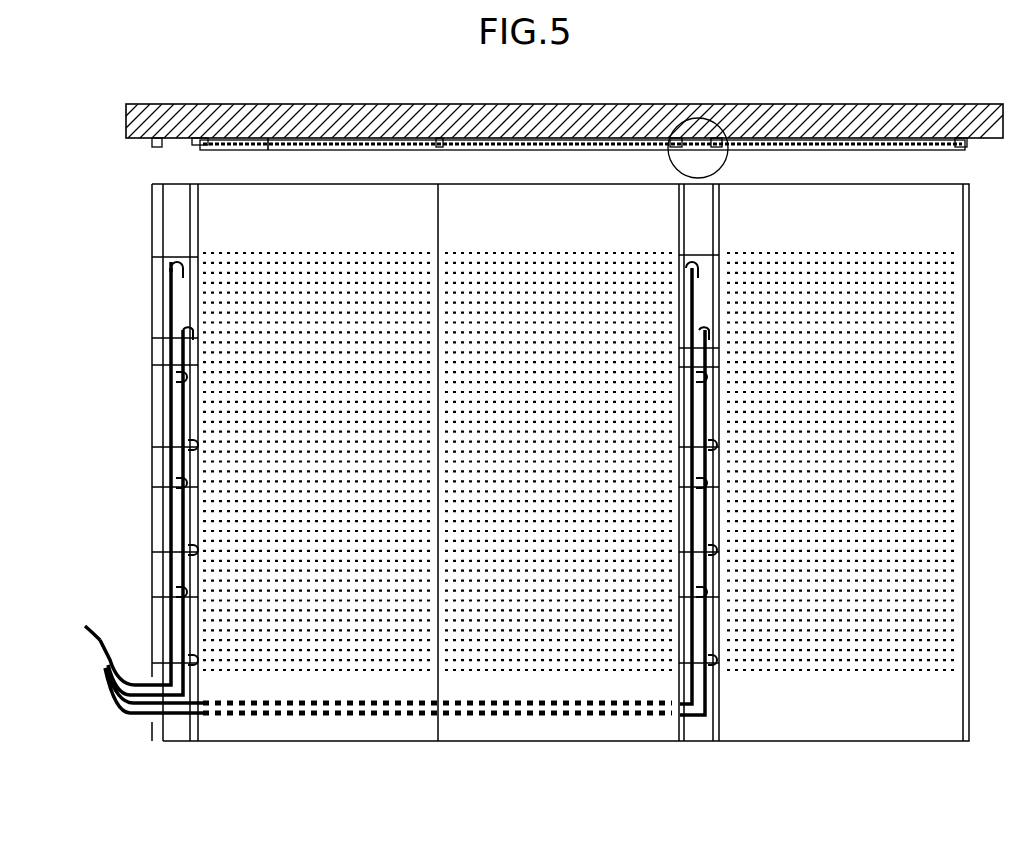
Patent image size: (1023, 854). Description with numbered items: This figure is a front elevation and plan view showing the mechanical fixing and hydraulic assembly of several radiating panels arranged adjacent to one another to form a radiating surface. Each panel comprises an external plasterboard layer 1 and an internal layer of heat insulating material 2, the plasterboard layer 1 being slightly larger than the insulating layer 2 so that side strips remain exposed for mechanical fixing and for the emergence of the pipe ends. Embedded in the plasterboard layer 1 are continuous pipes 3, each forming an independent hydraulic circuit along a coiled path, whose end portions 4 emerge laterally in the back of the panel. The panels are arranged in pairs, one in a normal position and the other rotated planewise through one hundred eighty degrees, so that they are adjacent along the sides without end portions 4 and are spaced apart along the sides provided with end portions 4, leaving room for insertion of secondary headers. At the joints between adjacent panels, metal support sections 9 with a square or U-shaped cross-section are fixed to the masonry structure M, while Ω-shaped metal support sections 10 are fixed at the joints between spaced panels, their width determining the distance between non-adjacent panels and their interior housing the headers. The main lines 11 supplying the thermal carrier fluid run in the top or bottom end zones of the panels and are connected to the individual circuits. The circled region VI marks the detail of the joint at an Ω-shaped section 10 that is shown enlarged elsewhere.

The plasterboard layer 1 is at (290, 150).
The heat insulating layer 2 is at (268, 140).
The continuous pipes 3 is at (330, 315).
The end portions 4 is at (180, 260).
The metal support sections 9 is at (440, 140).
The Ω-shaped metal support sections 10 is at (158, 138).
The main lines 11 is at (100, 640).
The masonry structure M is at (570, 122).
The detail circle VI is at (715, 120).